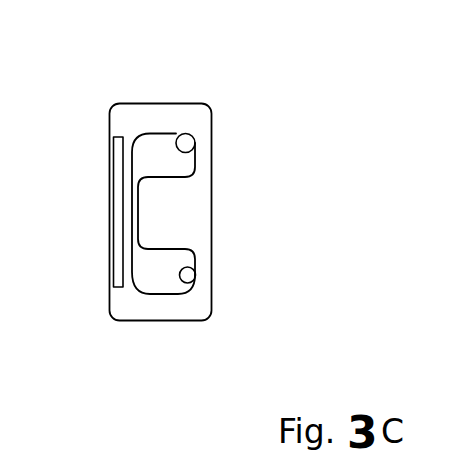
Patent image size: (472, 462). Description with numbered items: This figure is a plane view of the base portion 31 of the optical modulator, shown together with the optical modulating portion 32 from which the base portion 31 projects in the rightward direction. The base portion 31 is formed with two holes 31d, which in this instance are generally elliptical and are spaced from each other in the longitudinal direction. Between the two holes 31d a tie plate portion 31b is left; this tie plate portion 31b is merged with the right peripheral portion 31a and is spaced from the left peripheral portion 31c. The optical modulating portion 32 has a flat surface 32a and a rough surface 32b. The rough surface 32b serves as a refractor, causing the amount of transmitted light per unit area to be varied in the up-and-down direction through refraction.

The base portion 31 is at (158, 200).
The right peripheral portion 31a is at (205, 225).
The tie plate portion 31b is at (163, 233).
The left peripheral portion 31c is at (130, 228).
The holes 31d is at (178, 137).
The optical modulating portion 32 is at (83, 163).
The flat surface 32a is at (127, 206).
The rough surface 32b is at (113, 189).